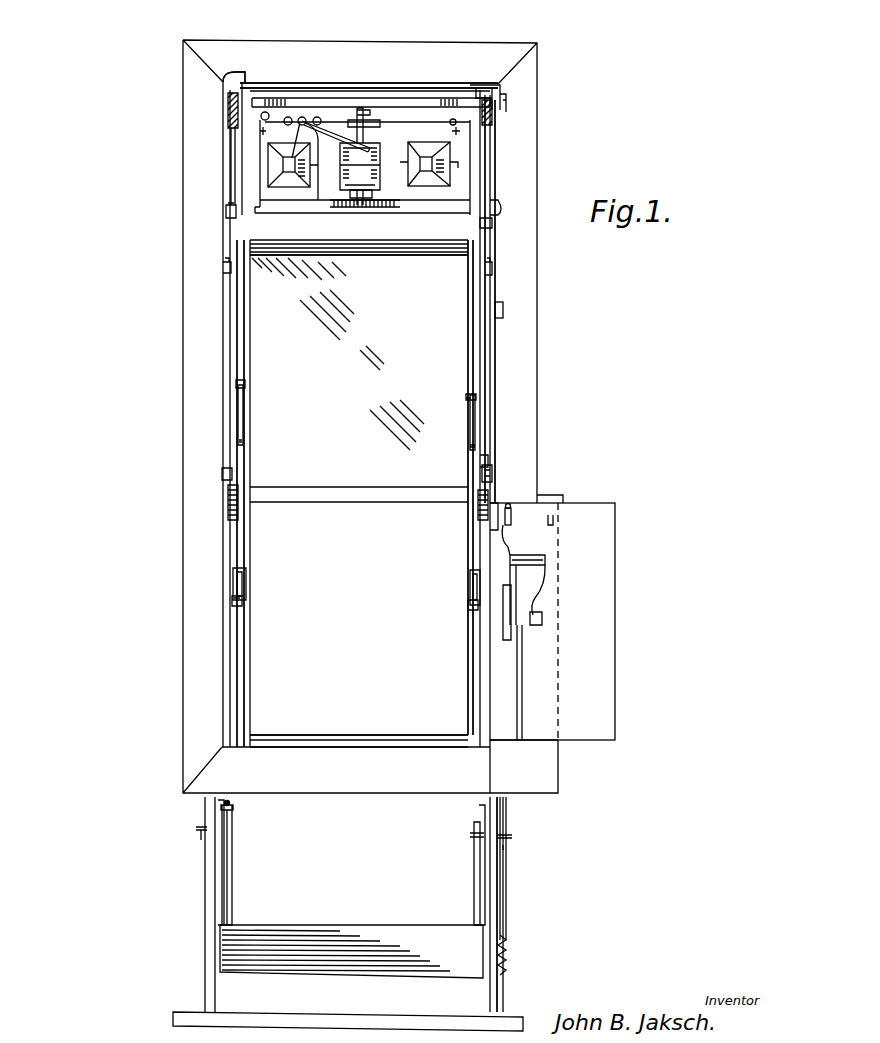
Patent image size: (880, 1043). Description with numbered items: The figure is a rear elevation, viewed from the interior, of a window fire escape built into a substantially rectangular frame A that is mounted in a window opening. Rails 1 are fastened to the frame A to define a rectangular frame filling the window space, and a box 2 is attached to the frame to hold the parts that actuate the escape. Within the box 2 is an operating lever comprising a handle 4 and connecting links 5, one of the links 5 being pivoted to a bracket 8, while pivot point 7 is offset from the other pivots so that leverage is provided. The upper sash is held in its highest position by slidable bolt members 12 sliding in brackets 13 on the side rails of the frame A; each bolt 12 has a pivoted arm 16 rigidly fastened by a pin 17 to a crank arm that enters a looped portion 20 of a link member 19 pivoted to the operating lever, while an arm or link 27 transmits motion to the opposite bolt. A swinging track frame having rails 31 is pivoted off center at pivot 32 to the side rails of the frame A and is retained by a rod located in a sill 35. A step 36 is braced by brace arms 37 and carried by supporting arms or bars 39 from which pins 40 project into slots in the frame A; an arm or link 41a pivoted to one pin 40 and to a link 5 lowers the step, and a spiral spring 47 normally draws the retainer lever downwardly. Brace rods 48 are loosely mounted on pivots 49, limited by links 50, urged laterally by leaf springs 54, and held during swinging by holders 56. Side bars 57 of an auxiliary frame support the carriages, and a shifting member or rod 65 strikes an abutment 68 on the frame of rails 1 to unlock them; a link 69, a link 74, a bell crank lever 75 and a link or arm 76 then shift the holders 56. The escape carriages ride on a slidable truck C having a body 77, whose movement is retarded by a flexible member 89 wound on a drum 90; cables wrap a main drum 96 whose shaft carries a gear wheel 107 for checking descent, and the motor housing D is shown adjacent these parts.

The rails 1 is at (340, 50).
The box 2 is at (597, 660).
The handle 4 is at (527, 555).
The connecting links 5 is at (515, 585).
The pivot point 7 is at (505, 625).
The bracket 8 is at (541, 618).
The slidable bolt members 12 is at (225, 472).
The brackets 13 is at (488, 467).
The arm 16 is at (225, 500).
The pin 17 is at (485, 532).
The link member 19 is at (507, 540).
The looped portion 20 is at (510, 520).
The arm or link 27 is at (527, 710).
The rails 31 is at (243, 700).
The pivot 32 is at (222, 268).
The sill 35 is at (227, 862).
The step 36 is at (351, 951).
The brace arms 37 is at (222, 905).
The supporting arms or bars 39 is at (475, 875).
The pins 40 is at (201, 840).
The arm or link 41a is at (505, 648).
The spiral spring 47 is at (506, 952).
The brace rods 48 is at (233, 380).
The pivots 49 is at (222, 600).
The links 50 is at (243, 425).
The leaf springs 54 is at (236, 578).
The holders 56 is at (230, 210).
The side bars 57 is at (228, 110).
The shifting member or rod 65 is at (497, 155).
The abutment 68 is at (500, 320).
The link 69 is at (478, 90).
The link 74 is at (390, 85).
The bell crank lever 75 is at (228, 90).
The link or arm 76 is at (243, 130).
The body 77 is at (420, 200).
The flexible member 89 is at (265, 112).
The roller or drum 90 is at (304, 103).
The main drum 96 is at (348, 175).
The gear wheel 107 is at (385, 208).
The frame A is at (205, 955).
The slidable carriage or truck C is at (425, 120).
The motor housing D is at (290, 165).